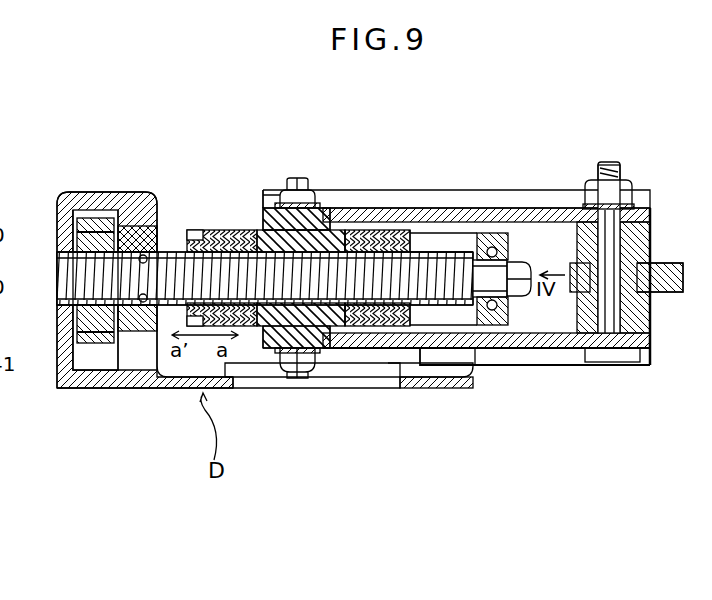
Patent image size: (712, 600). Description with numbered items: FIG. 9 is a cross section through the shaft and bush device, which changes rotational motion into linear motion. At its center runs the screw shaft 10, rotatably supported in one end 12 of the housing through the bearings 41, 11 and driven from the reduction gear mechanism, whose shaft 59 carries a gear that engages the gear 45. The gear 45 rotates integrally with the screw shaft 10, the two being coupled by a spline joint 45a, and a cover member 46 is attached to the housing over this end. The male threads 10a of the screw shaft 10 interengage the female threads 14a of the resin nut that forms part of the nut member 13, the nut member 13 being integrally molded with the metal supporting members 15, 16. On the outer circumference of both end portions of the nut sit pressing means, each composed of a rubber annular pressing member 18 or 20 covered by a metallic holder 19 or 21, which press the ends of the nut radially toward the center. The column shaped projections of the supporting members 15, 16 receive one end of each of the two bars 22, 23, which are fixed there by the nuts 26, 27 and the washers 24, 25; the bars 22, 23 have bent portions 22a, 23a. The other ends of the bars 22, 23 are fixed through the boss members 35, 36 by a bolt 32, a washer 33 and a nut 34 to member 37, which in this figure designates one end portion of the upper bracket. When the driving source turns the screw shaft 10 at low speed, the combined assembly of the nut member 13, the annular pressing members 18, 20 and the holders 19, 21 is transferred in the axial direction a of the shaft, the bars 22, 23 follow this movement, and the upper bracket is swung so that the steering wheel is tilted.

The screw shaft 10 is at (172, 252).
The male threads 10a is at (442, 238).
The bearing 11 is at (494, 234).
The housing end 12 is at (483, 350).
The nut member 13 is at (246, 240).
The female threads 14a is at (408, 220).
The supporting member 15 is at (262, 350).
The supporting member 16 is at (302, 232).
The annular pressing member 18 is at (192, 230).
The holder 19 is at (230, 232).
The annular pressing member 20 is at (378, 232).
The holder 21 is at (350, 232).
The bar 22 is at (512, 352).
The bent portion 22a is at (556, 367).
The bar 23 is at (543, 208).
The bent portion 23a is at (565, 200).
The washer 24 is at (328, 352).
The washer 25 is at (278, 208).
The nut 26 is at (304, 365).
The nut 27 is at (294, 200).
The bolt 32 is at (605, 355).
The washer 33 is at (636, 218).
The nut 34 is at (607, 185).
The boss member 35 is at (650, 340).
The boss member 36 is at (631, 232).
The end portion of upper bracket 37 is at (672, 292).
The bearing 41 is at (133, 240).
The gear 45 is at (88, 245).
The spline joint 45a is at (75, 250).
The cover member 46 is at (64, 200).
The shaft 59 is at (12, 409).